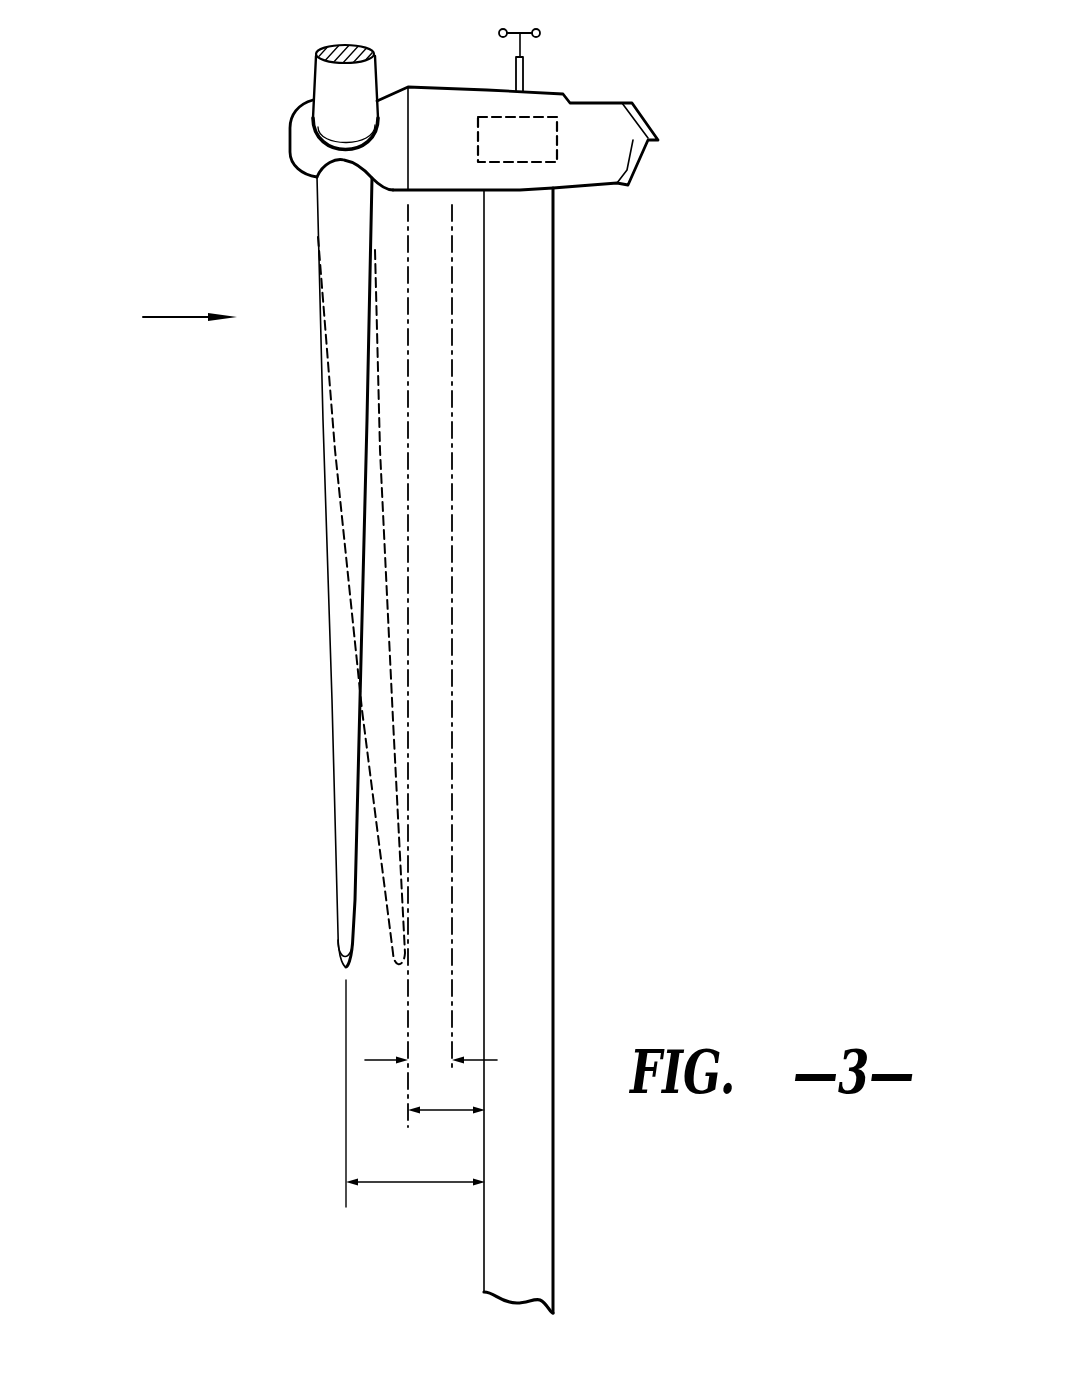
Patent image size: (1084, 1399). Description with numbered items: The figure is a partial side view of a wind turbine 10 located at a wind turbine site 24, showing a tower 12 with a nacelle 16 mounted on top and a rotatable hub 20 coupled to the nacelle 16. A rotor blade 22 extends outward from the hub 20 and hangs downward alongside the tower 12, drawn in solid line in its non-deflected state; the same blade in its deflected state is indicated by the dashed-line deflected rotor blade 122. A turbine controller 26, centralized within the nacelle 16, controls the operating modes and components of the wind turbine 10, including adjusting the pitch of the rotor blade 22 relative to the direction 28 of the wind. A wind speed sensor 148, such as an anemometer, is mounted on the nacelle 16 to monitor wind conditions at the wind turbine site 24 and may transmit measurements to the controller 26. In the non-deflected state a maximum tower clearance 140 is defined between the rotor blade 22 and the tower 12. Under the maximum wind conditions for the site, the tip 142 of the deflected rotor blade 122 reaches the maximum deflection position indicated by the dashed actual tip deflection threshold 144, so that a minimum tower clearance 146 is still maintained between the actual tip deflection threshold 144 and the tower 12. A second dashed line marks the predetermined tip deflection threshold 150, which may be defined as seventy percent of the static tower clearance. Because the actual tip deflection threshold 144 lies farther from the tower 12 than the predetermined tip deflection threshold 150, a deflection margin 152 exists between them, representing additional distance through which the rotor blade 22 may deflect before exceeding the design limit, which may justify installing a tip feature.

The wind turbine 10 is at (674, 79).
The tower 12 is at (553, 962).
The nacelle 16 is at (647, 153).
The hub 20 is at (290, 135).
The rotor blade 22 is at (328, 83).
The wind turbine site 24 is at (697, 633).
The turbine controller 26 is at (557, 152).
The direction of the wind 28 is at (180, 315).
The deflected rotor blade 122 is at (340, 508).
The maximum tower clearance 140 is at (432, 1183).
The tip 142 is at (345, 968).
The actual tip deflection threshold 144 is at (408, 728).
The minimum tower clearance 146 is at (445, 1112).
The wind speed sensor 148 is at (522, 70).
The predetermined tip deflection threshold 150 is at (452, 850).
The deflection margin 152 is at (378, 1062).